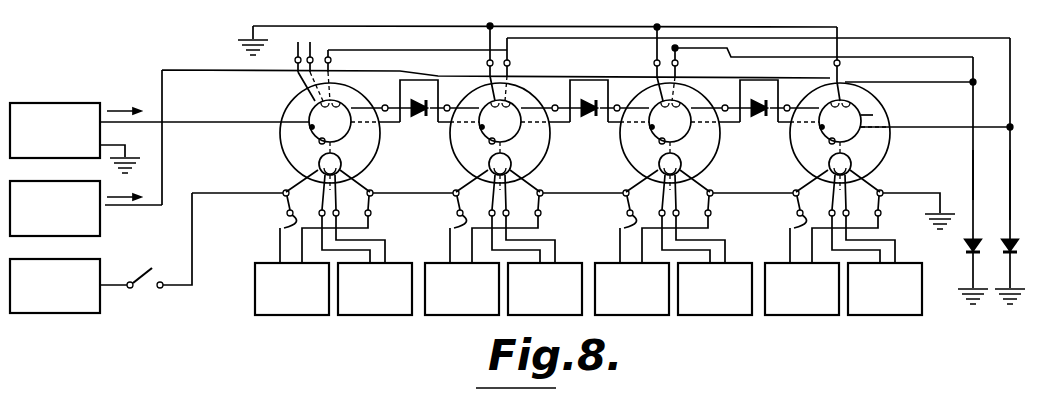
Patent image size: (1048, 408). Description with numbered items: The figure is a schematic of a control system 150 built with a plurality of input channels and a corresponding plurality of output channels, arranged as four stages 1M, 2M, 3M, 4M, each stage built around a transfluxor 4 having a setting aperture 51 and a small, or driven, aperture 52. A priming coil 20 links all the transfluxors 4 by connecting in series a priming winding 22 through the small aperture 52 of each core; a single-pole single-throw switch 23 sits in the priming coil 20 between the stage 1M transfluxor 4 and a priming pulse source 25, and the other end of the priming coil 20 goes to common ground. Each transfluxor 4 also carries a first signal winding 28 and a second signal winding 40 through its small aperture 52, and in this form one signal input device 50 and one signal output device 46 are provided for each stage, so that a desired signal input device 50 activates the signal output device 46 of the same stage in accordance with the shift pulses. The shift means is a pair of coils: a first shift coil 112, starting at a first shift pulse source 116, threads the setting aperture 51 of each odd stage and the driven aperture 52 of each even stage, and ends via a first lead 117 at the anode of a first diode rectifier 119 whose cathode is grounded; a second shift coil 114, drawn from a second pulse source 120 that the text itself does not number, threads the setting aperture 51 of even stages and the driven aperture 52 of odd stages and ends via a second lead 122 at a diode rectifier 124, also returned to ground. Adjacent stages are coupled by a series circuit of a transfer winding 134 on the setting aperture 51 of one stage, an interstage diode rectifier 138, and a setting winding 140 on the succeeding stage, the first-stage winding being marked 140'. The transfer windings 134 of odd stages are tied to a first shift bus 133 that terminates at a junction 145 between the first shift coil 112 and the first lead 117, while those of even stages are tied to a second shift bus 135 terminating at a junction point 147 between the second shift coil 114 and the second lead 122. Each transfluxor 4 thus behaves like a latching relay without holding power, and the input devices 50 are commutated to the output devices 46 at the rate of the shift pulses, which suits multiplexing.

The first stage 1M is at (370, 153).
The second stage 2M is at (540, 153).
The third stage 3M is at (710, 153).
The fourth stage 4M is at (880, 153).
The transfluxor 4 is at (281, 107).
The priming coil 20 is at (160, 290).
The priming winding 22 is at (286, 209).
The single-pole single-throw switch 23 is at (145, 266).
The priming pulse source 25 is at (100, 313).
The first signal winding 28 is at (283, 224).
The second signal winding 40 is at (338, 198).
The signal output device 46 is at (254, 274).
The signal input device 50 is at (360, 316).
The setting aperture 51 is at (310, 128).
The small aperture 52 is at (319, 160).
The first shift coil 112 is at (206, 124).
The second shift coil 114 is at (200, 70).
The first shift pulse source 116 is at (112, 96).
The first lead 117 is at (972, 178).
The first diode rectifier 119 is at (960, 250).
The second shift pulse source 120 is at (103, 220).
The second lead 122 is at (1008, 202).
The diode rectifier 124 is at (1006, 238).
The first shift bus 133 is at (383, 51).
The transfer winding 134 is at (334, 86).
The second shift bus 135 is at (735, 48).
The interstage diode rectifier 138 is at (422, 118).
The setting winding 140 is at (641, 63).
The target electrode lead 140' is at (281, 71).
The junction 145 is at (972, 84).
The junction point 147 is at (1008, 130).
The control system 150 is at (462, 49).